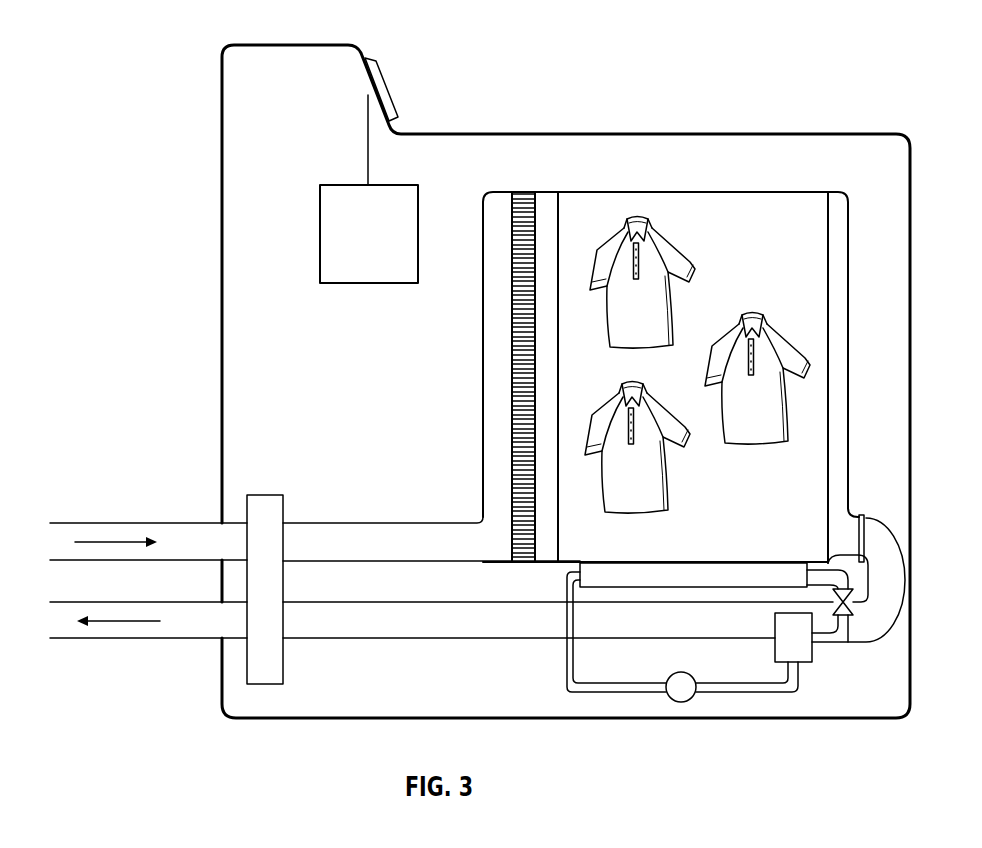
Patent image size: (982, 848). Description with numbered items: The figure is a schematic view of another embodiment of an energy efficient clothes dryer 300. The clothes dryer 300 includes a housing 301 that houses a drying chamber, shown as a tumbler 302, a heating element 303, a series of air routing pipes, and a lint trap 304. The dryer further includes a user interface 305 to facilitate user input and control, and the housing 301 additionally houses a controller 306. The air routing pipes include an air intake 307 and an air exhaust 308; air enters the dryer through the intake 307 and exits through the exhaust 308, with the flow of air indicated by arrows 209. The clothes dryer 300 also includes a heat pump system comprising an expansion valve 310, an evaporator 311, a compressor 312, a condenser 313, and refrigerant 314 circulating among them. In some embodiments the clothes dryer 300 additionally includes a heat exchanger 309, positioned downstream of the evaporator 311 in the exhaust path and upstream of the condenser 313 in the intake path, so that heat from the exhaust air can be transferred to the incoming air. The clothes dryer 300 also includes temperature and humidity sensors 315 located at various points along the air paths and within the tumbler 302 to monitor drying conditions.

The clothes dryer 300 is at (127, 58).
The housing 301 is at (290, 45).
The tumbler 302 is at (770, 192).
The heating element 303 is at (520, 191).
The lint trap 304 is at (861, 514).
The user interface 305 is at (391, 87).
The controller 306 is at (386, 247).
The air intake 307 is at (70, 523).
The air exhaust 308 is at (77, 640).
The heat exchanger 309 is at (263, 495).
The expansion valve 310 is at (855, 583).
The evaporator 311 is at (814, 653).
The compressor 312 is at (677, 673).
The condenser 313 is at (622, 578).
The refrigerant 314 is at (637, 695).
The temperature and humidity sensors 315 is at (572, 203).
The fluid flow 209 is at (117, 546).